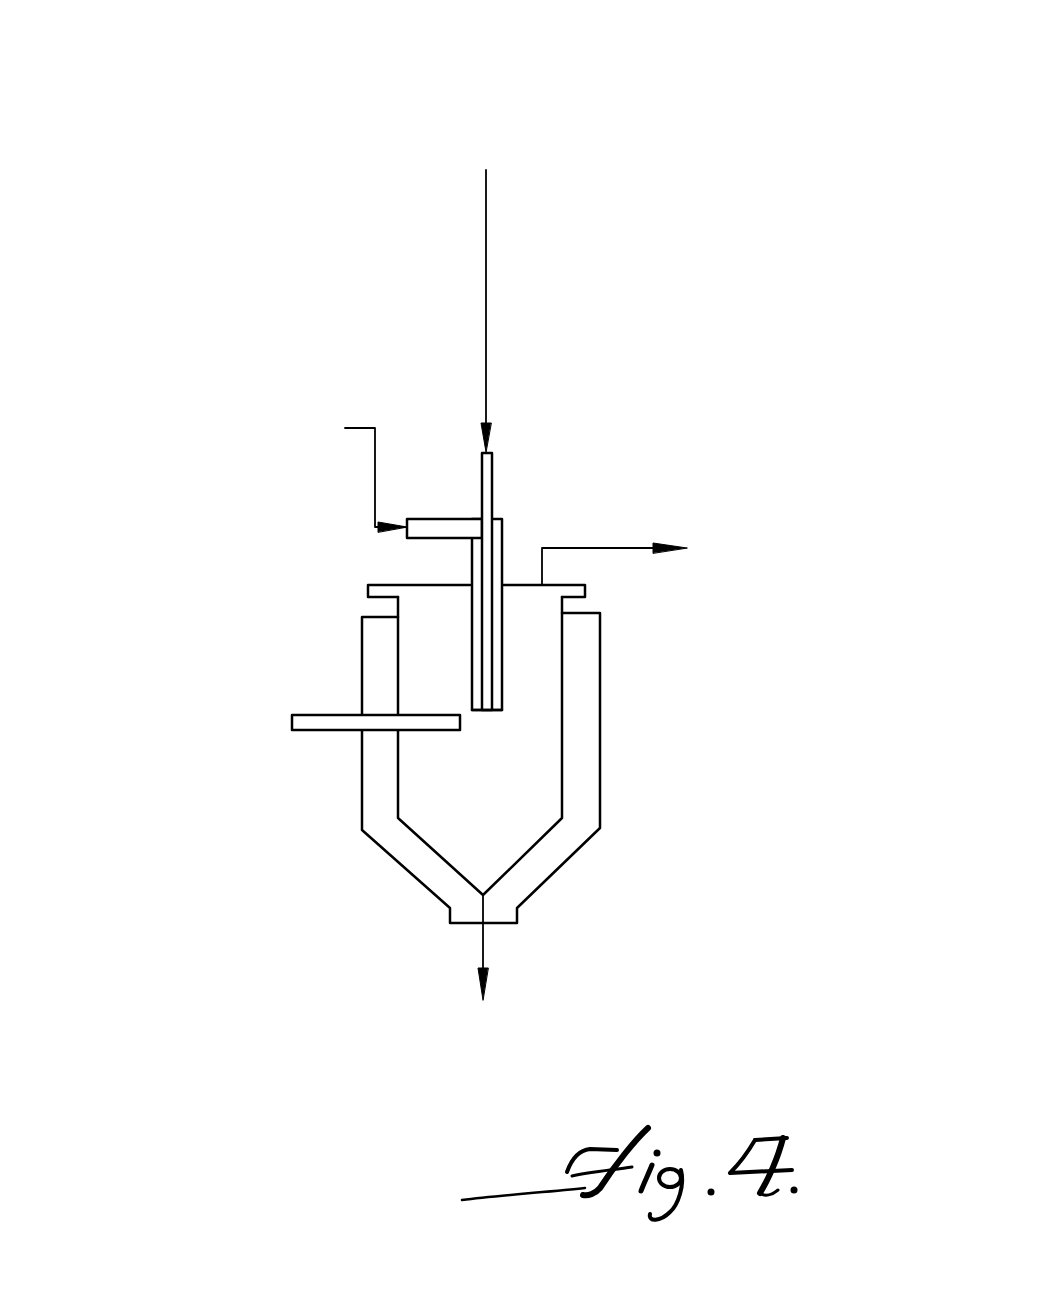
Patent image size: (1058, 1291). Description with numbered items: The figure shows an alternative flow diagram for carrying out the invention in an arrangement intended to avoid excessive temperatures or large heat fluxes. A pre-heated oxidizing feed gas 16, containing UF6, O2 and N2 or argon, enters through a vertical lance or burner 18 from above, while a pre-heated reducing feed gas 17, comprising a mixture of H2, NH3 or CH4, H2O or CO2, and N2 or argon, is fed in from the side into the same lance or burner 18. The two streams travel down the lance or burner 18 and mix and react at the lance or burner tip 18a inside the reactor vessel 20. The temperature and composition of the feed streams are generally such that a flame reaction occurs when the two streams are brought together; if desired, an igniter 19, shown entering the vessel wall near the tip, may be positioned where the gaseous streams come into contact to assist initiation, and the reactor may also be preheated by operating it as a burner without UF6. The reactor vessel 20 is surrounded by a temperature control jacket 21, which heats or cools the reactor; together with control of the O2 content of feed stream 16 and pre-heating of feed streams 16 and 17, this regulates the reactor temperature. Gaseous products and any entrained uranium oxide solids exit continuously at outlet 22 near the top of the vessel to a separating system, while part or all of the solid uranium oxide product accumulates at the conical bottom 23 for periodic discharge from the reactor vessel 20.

The oxidizing feed gas 16 is at (502, 63).
The reducing feed gas 17 is at (270, 360).
The lance or burner 18 is at (502, 558).
The lance or burner tip 18a is at (492, 714).
The igniter 19 is at (338, 716).
The reactor vessel 20 is at (437, 585).
The jacket 21 is at (593, 783).
The gaseous products outlet 22 is at (742, 497).
The solid uranium oxide product accumulation point 23 is at (567, 1022).